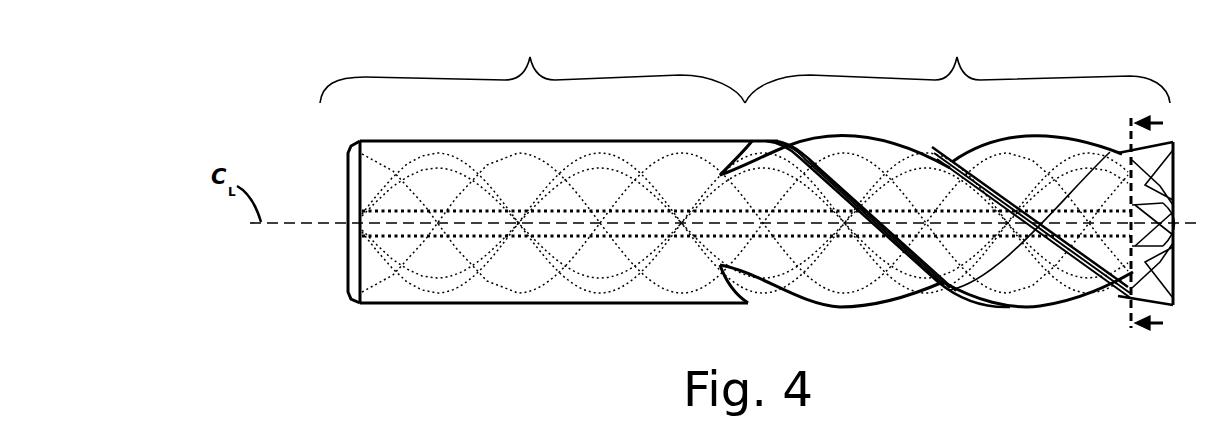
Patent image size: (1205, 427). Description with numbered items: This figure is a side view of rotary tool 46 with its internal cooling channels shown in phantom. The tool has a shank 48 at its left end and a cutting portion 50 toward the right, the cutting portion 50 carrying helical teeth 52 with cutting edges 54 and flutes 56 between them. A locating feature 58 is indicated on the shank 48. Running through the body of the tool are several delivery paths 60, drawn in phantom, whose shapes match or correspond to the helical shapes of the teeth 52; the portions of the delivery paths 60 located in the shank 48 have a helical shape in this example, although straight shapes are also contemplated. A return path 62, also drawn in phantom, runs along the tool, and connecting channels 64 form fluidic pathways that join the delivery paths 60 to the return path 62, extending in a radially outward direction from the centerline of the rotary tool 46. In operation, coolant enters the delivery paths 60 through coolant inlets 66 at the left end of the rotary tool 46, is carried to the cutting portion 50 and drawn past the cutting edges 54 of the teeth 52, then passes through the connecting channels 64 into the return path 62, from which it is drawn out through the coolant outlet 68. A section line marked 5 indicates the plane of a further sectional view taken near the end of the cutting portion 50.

The rotary tool 46 is at (266, 98).
The shank 48 is at (532, 68).
The cutting portion 50 is at (945, 168).
The teeth 52 is at (843, 308).
The cutting edges 54 is at (1015, 297).
The flutes 56 is at (880, 262).
The locating feature 58 is at (411, 141).
The delivery paths 60 is at (382, 295).
The return path 62 is at (504, 240).
The connecting channels 64 is at (1122, 185).
The coolant inlets 66 is at (349, 177).
The coolant outlet 68 is at (358, 212).
The section line 5- 5 is at (1155, 225).